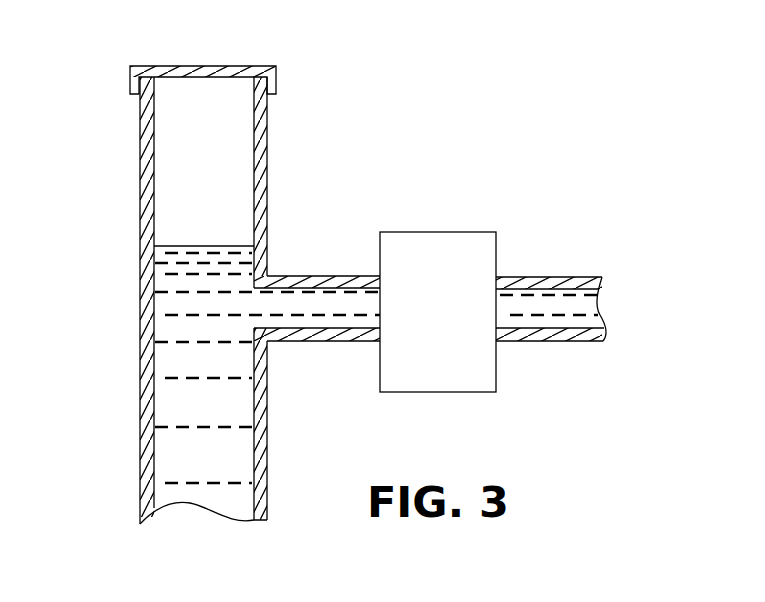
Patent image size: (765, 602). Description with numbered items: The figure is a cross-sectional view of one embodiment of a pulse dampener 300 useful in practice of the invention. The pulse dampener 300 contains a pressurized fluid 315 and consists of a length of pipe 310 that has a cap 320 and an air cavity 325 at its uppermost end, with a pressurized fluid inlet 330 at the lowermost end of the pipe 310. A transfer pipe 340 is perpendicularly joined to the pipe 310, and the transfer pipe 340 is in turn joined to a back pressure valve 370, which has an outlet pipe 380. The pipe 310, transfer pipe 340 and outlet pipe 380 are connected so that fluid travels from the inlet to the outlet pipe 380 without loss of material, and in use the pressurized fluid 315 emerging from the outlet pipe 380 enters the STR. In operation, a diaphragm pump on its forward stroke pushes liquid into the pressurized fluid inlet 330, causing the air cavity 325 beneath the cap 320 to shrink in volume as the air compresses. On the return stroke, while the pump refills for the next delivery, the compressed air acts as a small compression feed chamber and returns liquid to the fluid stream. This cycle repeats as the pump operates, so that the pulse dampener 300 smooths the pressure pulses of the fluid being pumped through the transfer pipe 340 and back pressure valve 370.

The pulse dampener 300 is at (356, 185).
The pipe 310 is at (140, 224).
The pressurized fluid 315 is at (183, 368).
The cap 320 is at (210, 66).
The air cavity 325 is at (183, 153).
The pressurized fluid inlet 330 is at (186, 519).
The transfer pipe 340 is at (312, 274).
The back pressure valve 370 is at (470, 232).
The outlet pipe 380 is at (570, 277).